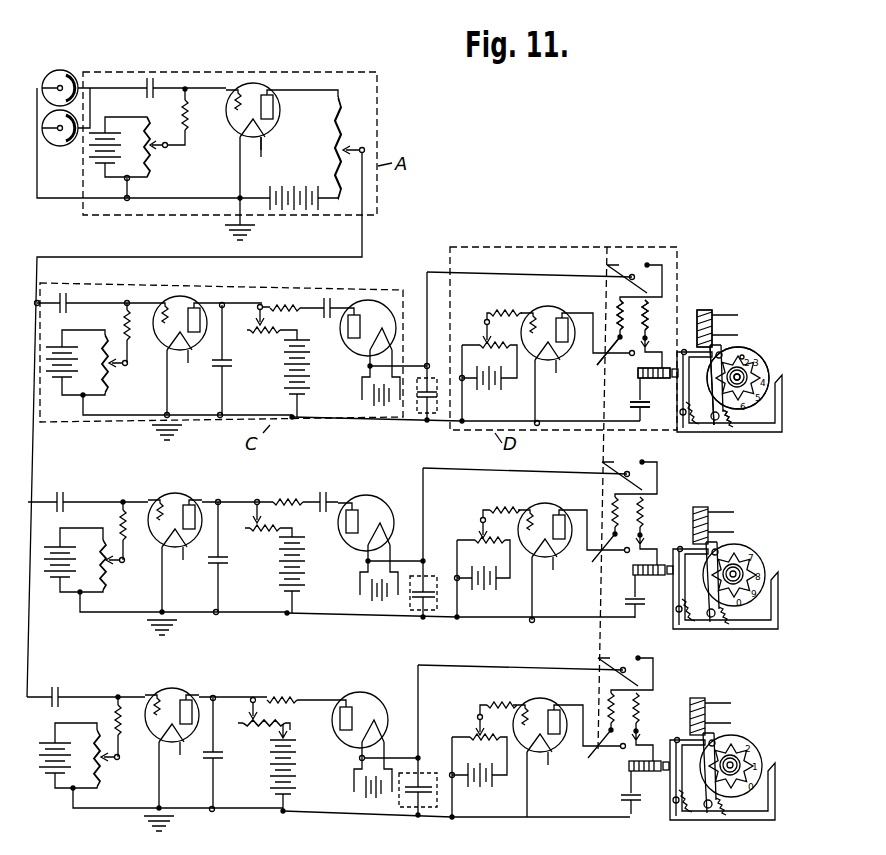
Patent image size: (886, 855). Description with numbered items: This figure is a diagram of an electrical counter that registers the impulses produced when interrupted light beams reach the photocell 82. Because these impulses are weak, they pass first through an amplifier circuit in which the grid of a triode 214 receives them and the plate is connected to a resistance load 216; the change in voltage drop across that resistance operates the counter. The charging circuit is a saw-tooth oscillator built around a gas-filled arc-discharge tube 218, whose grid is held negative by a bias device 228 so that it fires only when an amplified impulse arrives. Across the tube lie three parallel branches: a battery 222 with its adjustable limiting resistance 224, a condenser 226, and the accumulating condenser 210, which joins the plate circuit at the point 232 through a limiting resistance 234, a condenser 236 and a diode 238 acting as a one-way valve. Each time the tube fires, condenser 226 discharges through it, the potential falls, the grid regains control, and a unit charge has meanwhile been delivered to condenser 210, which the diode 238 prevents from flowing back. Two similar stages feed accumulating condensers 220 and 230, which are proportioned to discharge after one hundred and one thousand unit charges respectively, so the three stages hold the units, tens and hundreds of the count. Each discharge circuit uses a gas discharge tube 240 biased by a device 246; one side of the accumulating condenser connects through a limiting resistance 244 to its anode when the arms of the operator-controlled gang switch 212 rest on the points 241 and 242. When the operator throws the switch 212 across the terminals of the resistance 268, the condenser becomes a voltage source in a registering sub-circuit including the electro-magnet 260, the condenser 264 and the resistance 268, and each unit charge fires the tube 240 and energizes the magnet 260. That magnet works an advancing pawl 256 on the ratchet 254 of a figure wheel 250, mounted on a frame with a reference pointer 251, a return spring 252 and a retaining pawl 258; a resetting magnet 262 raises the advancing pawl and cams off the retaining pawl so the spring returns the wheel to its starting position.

The photocell 82 is at (62, 70).
The triode 214 is at (249, 84).
The resistance load 216 is at (342, 122).
The gas-filled arc-discharge tube 218 is at (173, 302).
The point 232 is at (258, 306).
The limiting resistance 234 is at (282, 306).
The condenser 236 is at (331, 302).
The diode 238 is at (377, 302).
The adjustable limiting resistance 224 is at (266, 331).
The condenser 226 is at (223, 373).
The grid bias device 228 is at (107, 378).
The battery 222 is at (308, 367).
The accumulating condenser 210 is at (422, 401).
The grid bias device 246 is at (473, 345).
The gas discharge tube 240 is at (540, 305).
The limiting resistance 244 is at (620, 303).
The contact point 242 is at (618, 340).
The contact point 241 is at (648, 265).
The resistance 268 is at (647, 313).
The resetting magnet 262 is at (707, 308).
The electro-magnet 260 is at (638, 368).
The condenser 264 is at (638, 415).
The figure wheel 250 is at (757, 345).
The advancing pawl 256 is at (742, 357).
The reference pointer 251 is at (776, 377).
The retaining pawl 258 is at (722, 377).
The ratchet 254 is at (728, 412).
The return spring 252 is at (742, 385).
The gang switch 212 is at (600, 484).
The accumulating condenser 220 is at (420, 600).
The accumulating condenser 230 is at (412, 799).